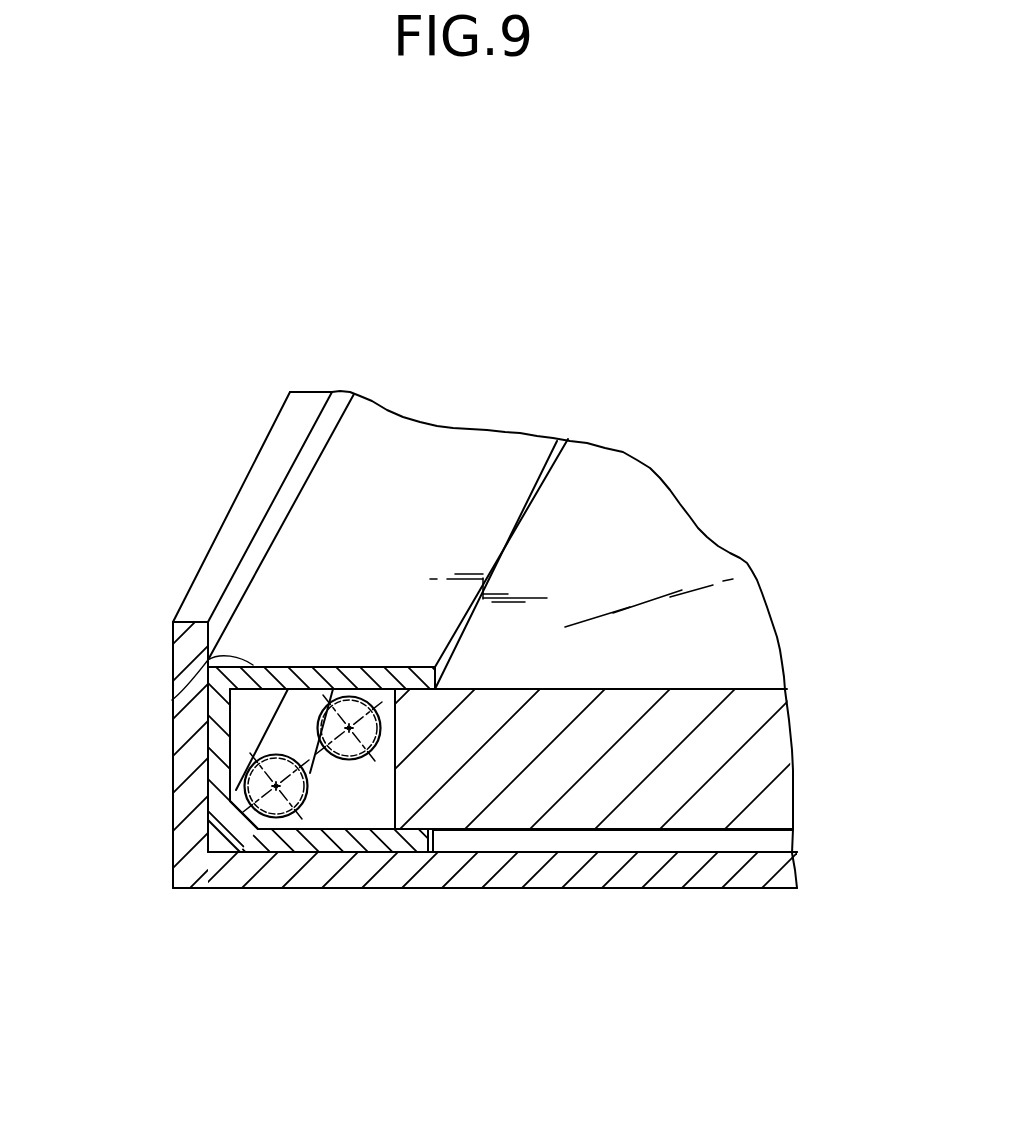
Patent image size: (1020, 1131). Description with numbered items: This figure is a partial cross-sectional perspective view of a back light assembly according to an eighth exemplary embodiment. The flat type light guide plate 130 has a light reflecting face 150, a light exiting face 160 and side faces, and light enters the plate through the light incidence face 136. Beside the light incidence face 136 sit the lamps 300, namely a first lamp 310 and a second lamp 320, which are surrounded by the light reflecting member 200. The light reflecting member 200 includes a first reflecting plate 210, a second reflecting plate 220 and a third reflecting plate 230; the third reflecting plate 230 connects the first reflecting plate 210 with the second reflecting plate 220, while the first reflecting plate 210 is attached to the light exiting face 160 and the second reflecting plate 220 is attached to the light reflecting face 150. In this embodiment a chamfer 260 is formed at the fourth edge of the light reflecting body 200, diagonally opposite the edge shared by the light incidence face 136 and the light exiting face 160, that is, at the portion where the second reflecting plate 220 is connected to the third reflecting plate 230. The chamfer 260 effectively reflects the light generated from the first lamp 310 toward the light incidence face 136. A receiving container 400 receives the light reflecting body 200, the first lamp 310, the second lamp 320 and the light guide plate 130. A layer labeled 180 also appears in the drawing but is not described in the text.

The light guide plate 130 is at (820, 781).
The light incidence face 136 is at (395, 787).
The light reflecting face 150 is at (640, 832).
The light exiting face 160 is at (746, 689).
The optical sheet 180 is at (380, 680).
The light reflecting member 200 is at (88, 695).
The first reflecting plate 210 is at (172, 700).
The second reflecting plate 220 is at (238, 869).
The third reflecting plate 230 is at (217, 787).
The chamfer 260 is at (225, 840).
The lamps 300 is at (312, 694).
The first lamp 310 is at (282, 753).
The second lamp 320 is at (349, 688).
The receiving container 400 is at (557, 870).